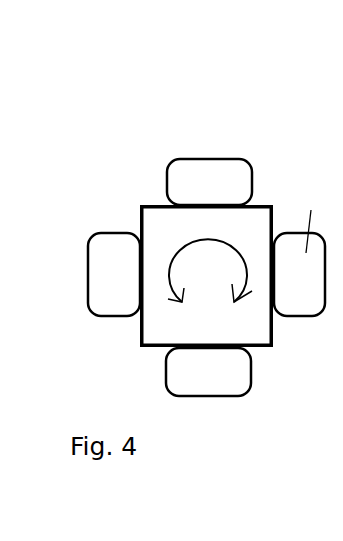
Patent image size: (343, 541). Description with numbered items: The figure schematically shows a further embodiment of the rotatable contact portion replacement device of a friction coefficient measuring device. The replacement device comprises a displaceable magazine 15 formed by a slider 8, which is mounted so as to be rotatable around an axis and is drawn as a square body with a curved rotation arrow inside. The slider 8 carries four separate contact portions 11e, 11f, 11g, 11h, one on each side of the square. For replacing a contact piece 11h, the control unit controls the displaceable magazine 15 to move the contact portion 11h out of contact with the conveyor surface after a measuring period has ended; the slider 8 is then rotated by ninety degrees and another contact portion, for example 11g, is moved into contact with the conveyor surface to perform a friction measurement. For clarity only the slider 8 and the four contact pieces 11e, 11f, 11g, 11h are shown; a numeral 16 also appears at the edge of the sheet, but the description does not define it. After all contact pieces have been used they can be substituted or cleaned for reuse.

The displaceable magazine 15 is at (130, 186).
The slider 8 is at (208, 288).
The contact portion 11e is at (217, 182).
The contact portion 11f is at (103, 292).
The contact portion 11g is at (247, 327).
The contact portion 11h is at (217, 387).
The housing 16 is at (342, 492).